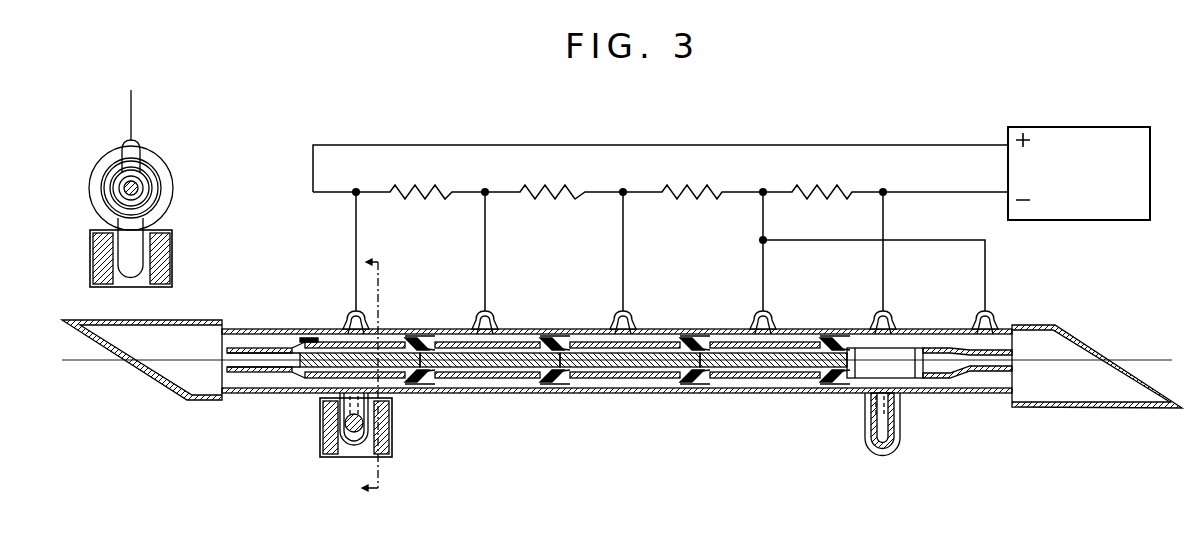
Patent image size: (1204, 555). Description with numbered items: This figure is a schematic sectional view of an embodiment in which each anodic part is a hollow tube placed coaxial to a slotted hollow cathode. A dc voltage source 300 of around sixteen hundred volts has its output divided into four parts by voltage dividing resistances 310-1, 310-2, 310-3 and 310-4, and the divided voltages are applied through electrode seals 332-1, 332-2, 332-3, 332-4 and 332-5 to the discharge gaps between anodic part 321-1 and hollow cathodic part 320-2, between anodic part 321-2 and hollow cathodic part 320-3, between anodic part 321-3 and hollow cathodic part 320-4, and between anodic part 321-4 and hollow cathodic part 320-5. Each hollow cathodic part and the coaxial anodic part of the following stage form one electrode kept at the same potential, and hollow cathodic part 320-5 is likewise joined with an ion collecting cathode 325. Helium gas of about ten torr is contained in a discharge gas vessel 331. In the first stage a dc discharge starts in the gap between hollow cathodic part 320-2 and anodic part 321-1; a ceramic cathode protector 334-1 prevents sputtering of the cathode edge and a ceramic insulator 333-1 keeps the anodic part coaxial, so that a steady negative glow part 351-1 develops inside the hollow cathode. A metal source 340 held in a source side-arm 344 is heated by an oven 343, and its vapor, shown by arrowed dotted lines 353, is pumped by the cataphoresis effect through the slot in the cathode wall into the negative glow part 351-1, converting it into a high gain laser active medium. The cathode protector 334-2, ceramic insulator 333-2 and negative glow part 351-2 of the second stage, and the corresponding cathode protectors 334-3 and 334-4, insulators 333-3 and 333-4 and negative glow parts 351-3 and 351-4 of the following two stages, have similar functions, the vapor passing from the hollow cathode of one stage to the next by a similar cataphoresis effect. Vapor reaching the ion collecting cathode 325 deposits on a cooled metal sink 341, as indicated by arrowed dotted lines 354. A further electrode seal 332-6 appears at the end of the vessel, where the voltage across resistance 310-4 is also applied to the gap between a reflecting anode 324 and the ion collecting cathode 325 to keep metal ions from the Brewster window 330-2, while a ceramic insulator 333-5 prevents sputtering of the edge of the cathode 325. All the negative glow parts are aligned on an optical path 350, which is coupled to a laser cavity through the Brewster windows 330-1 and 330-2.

The dc voltage source 300 is at (1047, 127).
The voltage dividing resistance 310-1 is at (395, 186).
The voltage dividing resistance 310-2 is at (513, 186).
The voltage dividing resistance 310-3 is at (658, 186).
The voltage dividing resistance 310-4 is at (780, 186).
The hollow cathodic part 320-2 is at (140, 190).
The hollow cathodic part 320-3 is at (488, 386).
The hollow cathodic part 320-4 is at (655, 386).
The hollow cathodic part 320-5 is at (777, 386).
The anodic part 321-1 is at (137, 182).
The anodic part 321-2 is at (456, 386).
The anodic part 321-3 is at (608, 380).
The anodic part 321-4 is at (745, 380).
The reflecting anode 324 is at (996, 372).
The ion collecting cathode 325 is at (856, 386).
The Brewster window 330-1 is at (128, 376).
The Brewster window 330-2 is at (1080, 352).
The discharge gas vessel 331 is at (150, 180).
The electrode seal 332-1 is at (359, 294).
The electrode seal 332-2 is at (488, 300).
The electrode seal 332-3 is at (626, 300).
The electrode seal 332-4 is at (765, 300).
The electrode seal 332-5 is at (885, 300).
The lead wire 332-6 is at (986, 310).
The ceramic insulator 333-1 is at (368, 340).
The ceramic insulator 333-2 is at (491, 338).
The terminal 333-3 is at (631, 338).
The terminal 333-4 is at (771, 340).
The ceramic insulator 333-5 is at (879, 340).
The ceramic cathode protector 334-1 is at (343, 329).
The ceramic cathode protector 334-2 is at (473, 329).
The seal boss 334-3 is at (611, 329).
The seal boss 334-4 is at (751, 329).
The metal source 340 is at (362, 460).
The metal sink 341 is at (888, 446).
The oven 343 is at (168, 252).
The source side-arm 344 is at (341, 442).
The optical path 350 is at (190, 346).
The negative glow part 351-1 is at (415, 392).
The negative glow part 351-2 is at (558, 384).
The negative glow part 351-3 is at (695, 386).
The negative glow part 351-4 is at (831, 384).
The arrowed dotted lines 353 is at (350, 430).
The insulating tube 354 is at (876, 432).